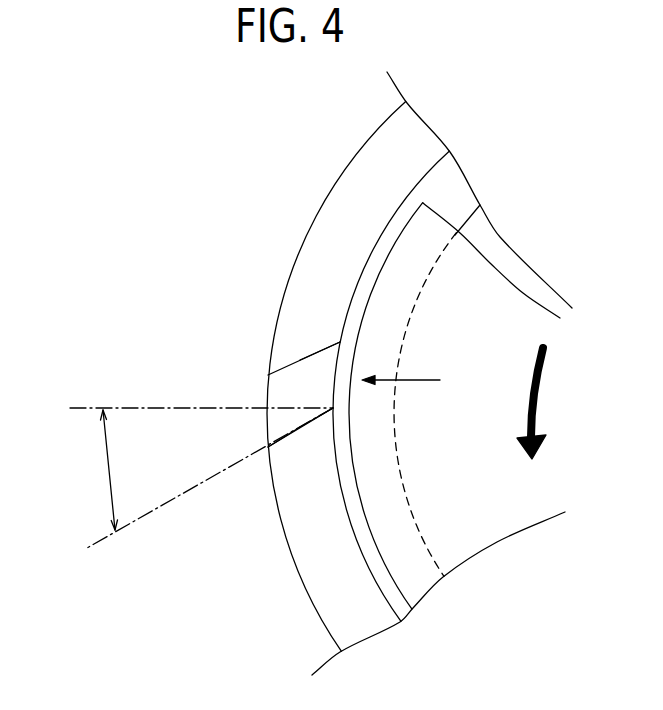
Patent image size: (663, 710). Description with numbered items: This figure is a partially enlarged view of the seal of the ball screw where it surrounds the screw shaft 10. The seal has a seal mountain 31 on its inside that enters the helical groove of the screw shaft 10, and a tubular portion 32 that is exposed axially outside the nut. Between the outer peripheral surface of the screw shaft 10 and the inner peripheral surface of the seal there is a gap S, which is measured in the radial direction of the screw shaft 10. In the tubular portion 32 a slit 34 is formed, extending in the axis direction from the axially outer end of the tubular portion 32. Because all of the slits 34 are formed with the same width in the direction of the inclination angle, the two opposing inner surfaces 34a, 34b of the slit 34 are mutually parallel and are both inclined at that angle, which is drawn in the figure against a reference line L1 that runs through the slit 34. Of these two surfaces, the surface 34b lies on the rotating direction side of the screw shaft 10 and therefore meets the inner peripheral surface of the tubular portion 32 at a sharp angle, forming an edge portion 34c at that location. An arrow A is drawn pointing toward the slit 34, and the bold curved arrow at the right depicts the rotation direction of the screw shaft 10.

The screw shaft 10 is at (488, 522).
The seal mountain 31 is at (458, 205).
The tubular portion 32 is at (378, 172).
The slit 34 is at (285, 390).
The inner surface of slit 34a is at (308, 362).
The inner surface of slit 34b is at (293, 432).
The edge portion 34c is at (333, 408).
The gap S is at (367, 532).
The reference line L1 is at (85, 408).
The direction A is at (413, 379).